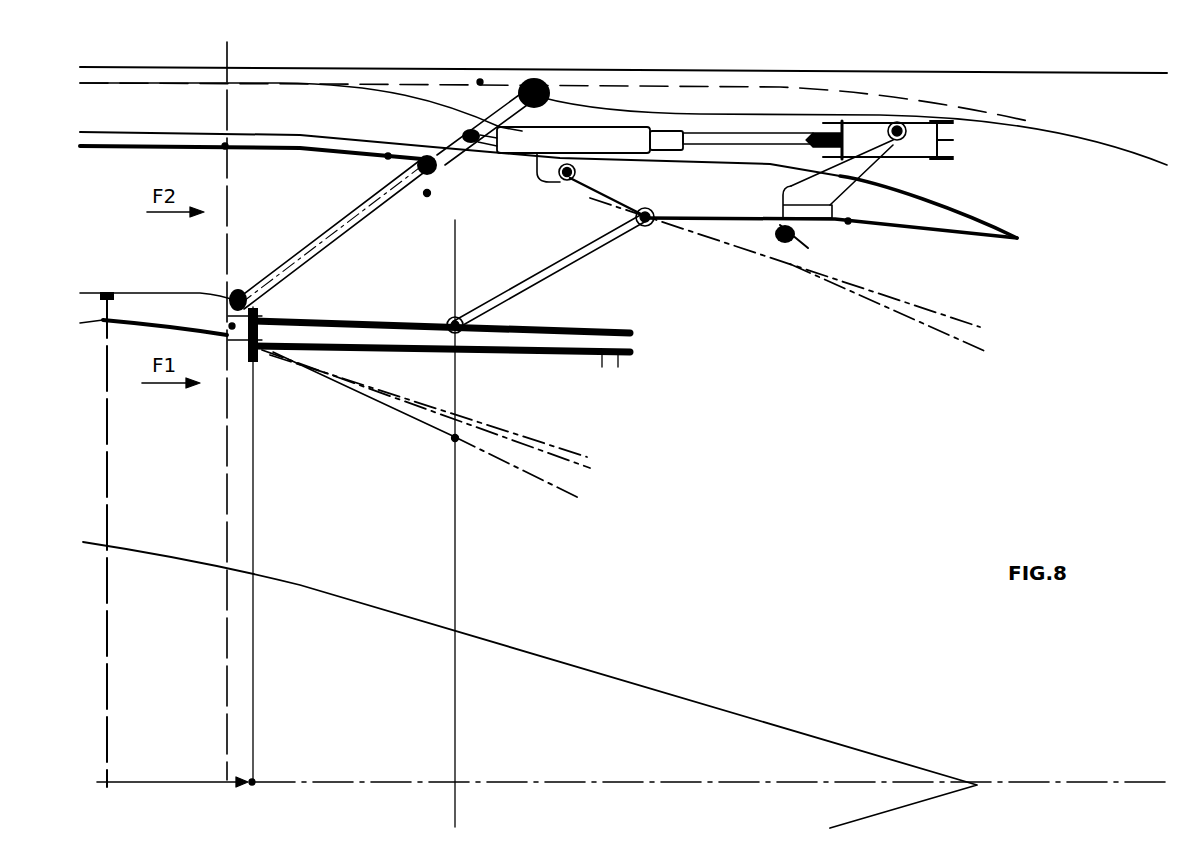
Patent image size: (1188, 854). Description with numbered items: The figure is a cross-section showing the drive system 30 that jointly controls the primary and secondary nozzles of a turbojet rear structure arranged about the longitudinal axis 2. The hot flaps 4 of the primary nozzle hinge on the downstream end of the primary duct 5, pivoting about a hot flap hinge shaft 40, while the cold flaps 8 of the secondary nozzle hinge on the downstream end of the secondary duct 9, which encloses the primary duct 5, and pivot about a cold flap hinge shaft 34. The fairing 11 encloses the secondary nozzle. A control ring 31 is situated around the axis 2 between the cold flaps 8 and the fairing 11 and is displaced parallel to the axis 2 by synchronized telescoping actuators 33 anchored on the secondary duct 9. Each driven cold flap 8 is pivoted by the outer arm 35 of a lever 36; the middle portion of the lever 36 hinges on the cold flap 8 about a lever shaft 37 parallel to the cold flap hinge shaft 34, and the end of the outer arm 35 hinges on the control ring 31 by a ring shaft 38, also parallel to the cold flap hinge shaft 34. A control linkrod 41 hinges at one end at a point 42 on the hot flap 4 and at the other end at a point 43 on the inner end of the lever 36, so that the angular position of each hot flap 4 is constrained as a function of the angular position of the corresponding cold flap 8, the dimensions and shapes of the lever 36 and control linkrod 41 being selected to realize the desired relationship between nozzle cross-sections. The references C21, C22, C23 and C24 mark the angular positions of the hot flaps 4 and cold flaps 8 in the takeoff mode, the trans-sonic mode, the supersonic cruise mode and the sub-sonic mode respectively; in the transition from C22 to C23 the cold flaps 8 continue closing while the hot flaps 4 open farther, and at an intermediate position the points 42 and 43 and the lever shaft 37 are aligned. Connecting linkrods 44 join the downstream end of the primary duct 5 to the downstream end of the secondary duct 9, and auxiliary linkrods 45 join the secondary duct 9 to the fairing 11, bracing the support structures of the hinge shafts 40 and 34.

The longitudinal axis 2 is at (1038, 784).
The hot flaps 4 is at (367, 325).
The primary duct 5 is at (138, 295).
The cold flaps 8 is at (941, 237).
The secondary duct 9 is at (167, 138).
The fairing 11 is at (1085, 92).
The drive system 30 is at (672, 313).
The control ring 31 is at (922, 128).
The telescoping actuators 33 is at (628, 126).
The cold flap hinge shaft 34 is at (562, 185).
The outer arm 35 is at (867, 170).
The lever 36 is at (815, 233).
The lever shaft 37 is at (790, 248).
The ring shaft 38 is at (897, 121).
The hot flap hinge shaft 40 is at (278, 313).
The control linkrod 41 is at (542, 280).
The hinge point on hot flap 42 is at (463, 318).
The hinge point on lever inner end 43 is at (647, 237).
The connecting linkrods 44 is at (338, 228).
The auxiliary linkrods 45 is at (470, 130).
The takeoff mode flap position C21 is at (1020, 240).
The trans-sonic mode flap position C22 is at (980, 327).
The supersonic cruise mode flap position C23 is at (987, 352).
The sub-sonic mode flap position C24 is at (587, 457).